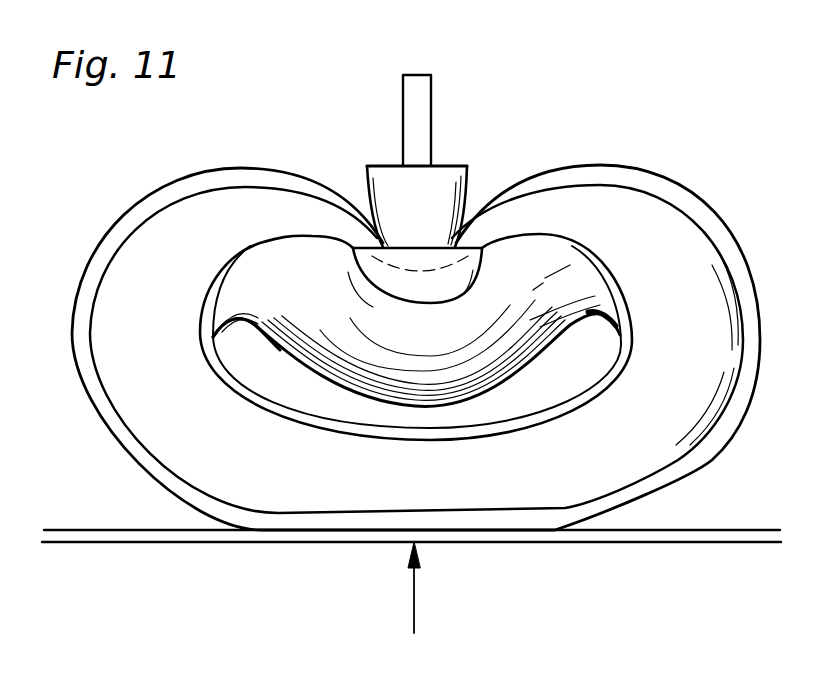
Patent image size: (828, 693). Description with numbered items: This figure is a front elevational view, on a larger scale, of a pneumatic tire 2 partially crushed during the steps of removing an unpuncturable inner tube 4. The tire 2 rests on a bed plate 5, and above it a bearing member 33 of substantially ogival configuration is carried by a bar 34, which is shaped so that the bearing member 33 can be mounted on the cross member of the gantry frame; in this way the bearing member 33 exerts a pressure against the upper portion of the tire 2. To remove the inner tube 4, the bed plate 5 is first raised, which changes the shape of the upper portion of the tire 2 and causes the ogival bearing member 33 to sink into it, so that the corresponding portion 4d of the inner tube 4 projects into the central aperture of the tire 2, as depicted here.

The pneumatic tire 2 is at (123, 220).
The unpuncturable inner tube 4 is at (590, 282).
The portion of the inner tube 4d is at (275, 313).
The bed plate 5 is at (78, 537).
The bearing member 33 is at (383, 187).
The bar 34 is at (425, 122).